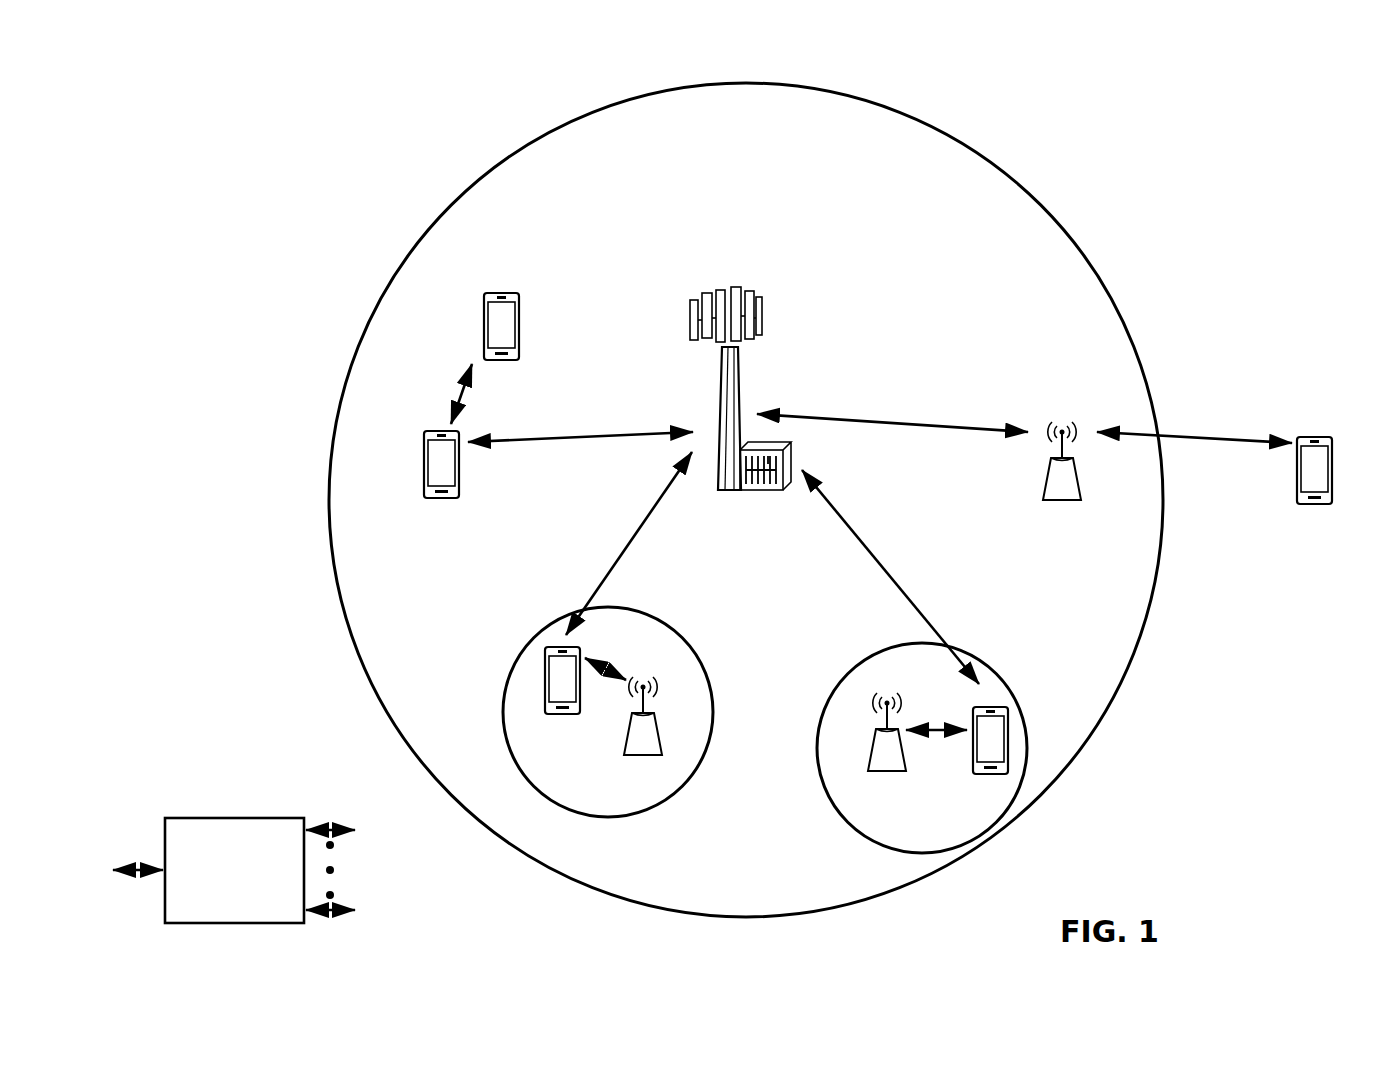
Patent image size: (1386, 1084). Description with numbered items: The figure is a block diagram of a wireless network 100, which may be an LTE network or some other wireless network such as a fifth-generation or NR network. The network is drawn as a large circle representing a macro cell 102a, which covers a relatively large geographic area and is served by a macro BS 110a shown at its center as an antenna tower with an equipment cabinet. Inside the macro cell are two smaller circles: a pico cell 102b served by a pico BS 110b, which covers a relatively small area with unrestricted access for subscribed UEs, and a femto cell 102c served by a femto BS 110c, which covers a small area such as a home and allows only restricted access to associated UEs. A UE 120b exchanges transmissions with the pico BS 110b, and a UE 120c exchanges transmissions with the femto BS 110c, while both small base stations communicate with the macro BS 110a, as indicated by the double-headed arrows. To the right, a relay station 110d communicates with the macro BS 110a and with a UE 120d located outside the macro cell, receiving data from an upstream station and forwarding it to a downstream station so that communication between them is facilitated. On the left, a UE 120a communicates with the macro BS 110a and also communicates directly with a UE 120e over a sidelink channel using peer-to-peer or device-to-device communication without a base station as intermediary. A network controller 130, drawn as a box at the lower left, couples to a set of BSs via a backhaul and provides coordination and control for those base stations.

The wireless network 100 is at (212, 78).
The macro cell 102a is at (1026, 190).
The pico cell 102b is at (698, 654).
The femto cell 102c is at (855, 652).
The macro BS 110a is at (738, 282).
The pico BS 110b is at (664, 737).
The femto BS 110c is at (868, 758).
The relay station 110d is at (1064, 422).
The UE 120a is at (424, 460).
The UE 120b is at (548, 714).
The UE 120c is at (975, 774).
The UE 120d is at (1328, 436).
The UE 120e is at (484, 316).
The network controller 130 is at (233, 817).